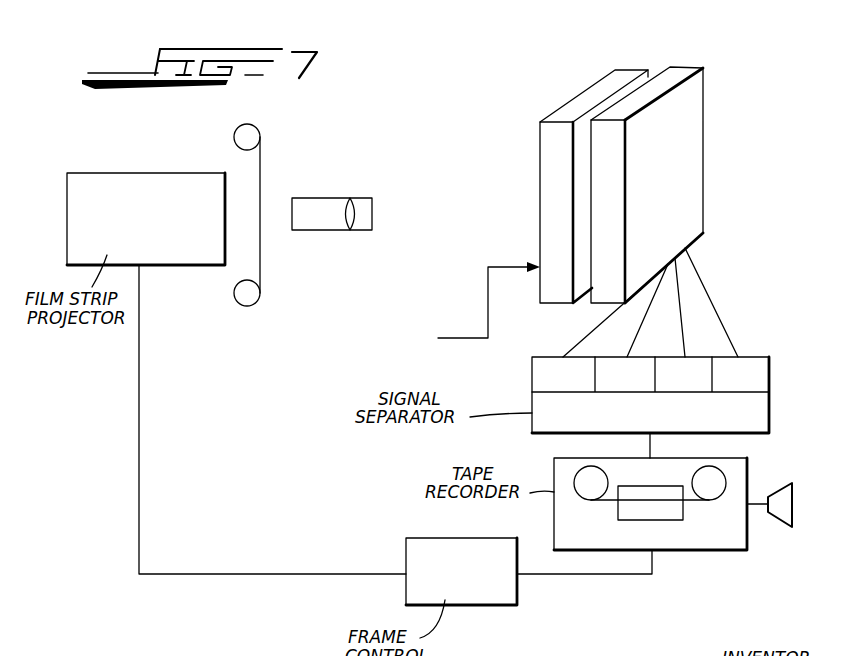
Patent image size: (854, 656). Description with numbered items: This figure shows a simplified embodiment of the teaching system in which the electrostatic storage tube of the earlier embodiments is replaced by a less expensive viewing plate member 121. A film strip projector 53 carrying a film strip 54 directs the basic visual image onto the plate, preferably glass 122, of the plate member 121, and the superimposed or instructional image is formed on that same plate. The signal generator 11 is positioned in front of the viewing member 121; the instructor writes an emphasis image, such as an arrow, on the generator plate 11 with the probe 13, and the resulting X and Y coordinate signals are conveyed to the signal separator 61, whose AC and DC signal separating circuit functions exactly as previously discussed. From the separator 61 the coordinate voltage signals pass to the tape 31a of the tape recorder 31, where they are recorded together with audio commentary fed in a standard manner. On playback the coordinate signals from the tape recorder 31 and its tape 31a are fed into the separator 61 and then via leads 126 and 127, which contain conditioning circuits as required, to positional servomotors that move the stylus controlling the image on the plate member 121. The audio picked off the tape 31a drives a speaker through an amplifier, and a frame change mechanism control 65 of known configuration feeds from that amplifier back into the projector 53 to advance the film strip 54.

The signal generator plate 11 is at (620, 162).
The viewing plate member 121 is at (707, 142).
The glass plate 122 is at (588, 175).
The probe 13 is at (513, 265).
The lead 126 is at (668, 302).
The lead 127 is at (678, 328).
The signal separator 61 is at (760, 407).
The tape recorder 31 is at (673, 536).
The tape 31a is at (693, 502).
The film strip projector 53 is at (163, 183).
The film strip 54 is at (262, 170).
The frame change mechanism control 65 is at (513, 595).